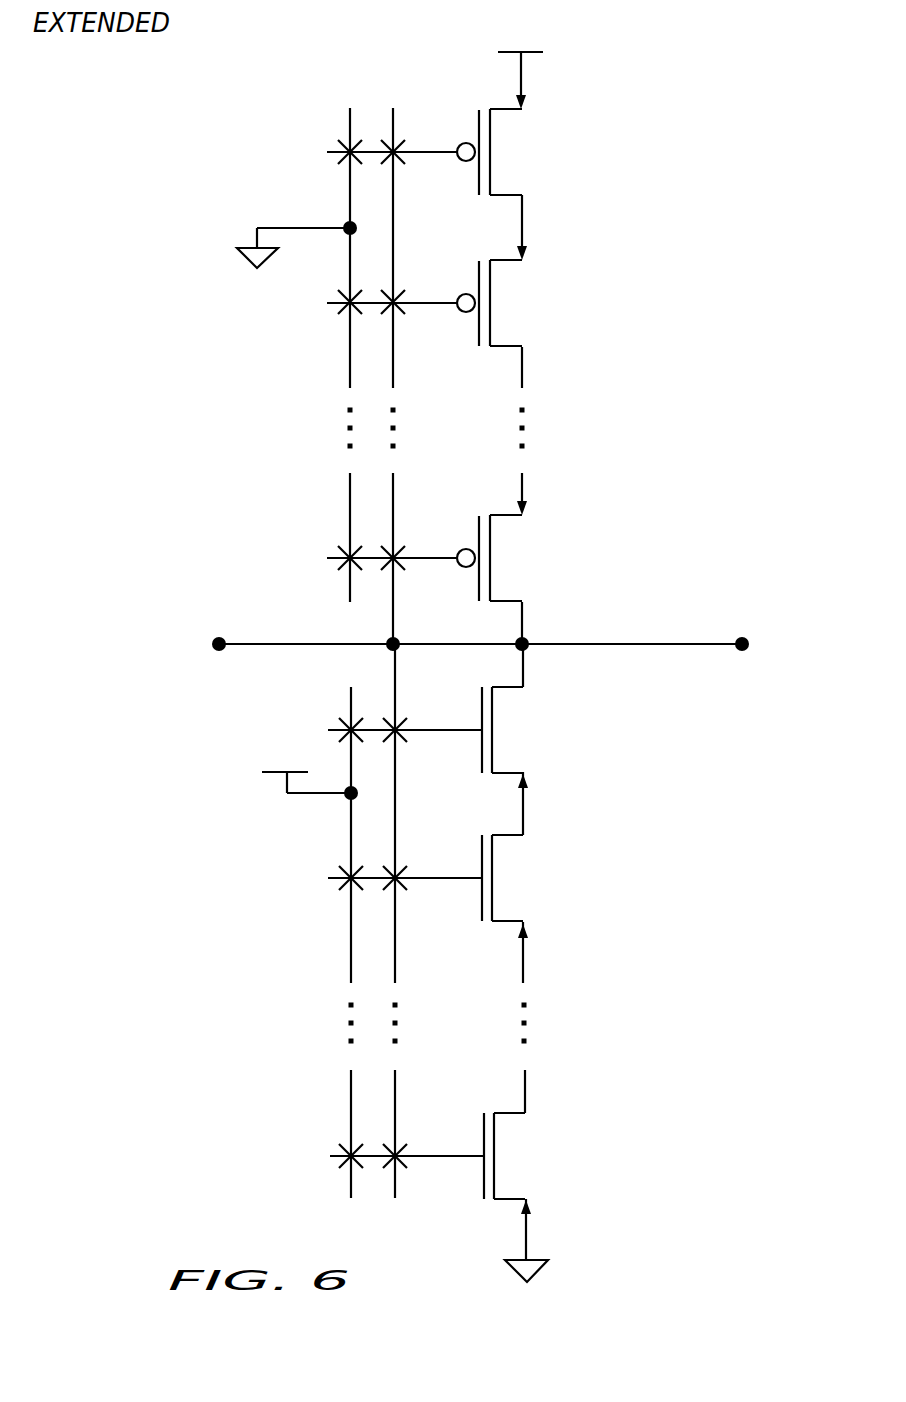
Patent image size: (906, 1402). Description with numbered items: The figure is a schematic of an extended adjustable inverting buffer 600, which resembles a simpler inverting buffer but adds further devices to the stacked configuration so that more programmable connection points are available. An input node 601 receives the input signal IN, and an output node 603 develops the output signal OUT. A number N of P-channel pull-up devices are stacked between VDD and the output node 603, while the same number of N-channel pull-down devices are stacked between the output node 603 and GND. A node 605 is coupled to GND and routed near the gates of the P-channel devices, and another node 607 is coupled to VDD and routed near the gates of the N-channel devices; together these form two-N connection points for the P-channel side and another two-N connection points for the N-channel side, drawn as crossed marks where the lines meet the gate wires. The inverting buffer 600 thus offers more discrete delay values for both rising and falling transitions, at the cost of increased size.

The extended adjustable inverting buffer 600 is at (692, 189).
The input node 601 is at (280, 645).
The output node 603 is at (611, 645).
The node coupled to GND 605 is at (350, 207).
The node coupled to VDD 607 is at (351, 806).